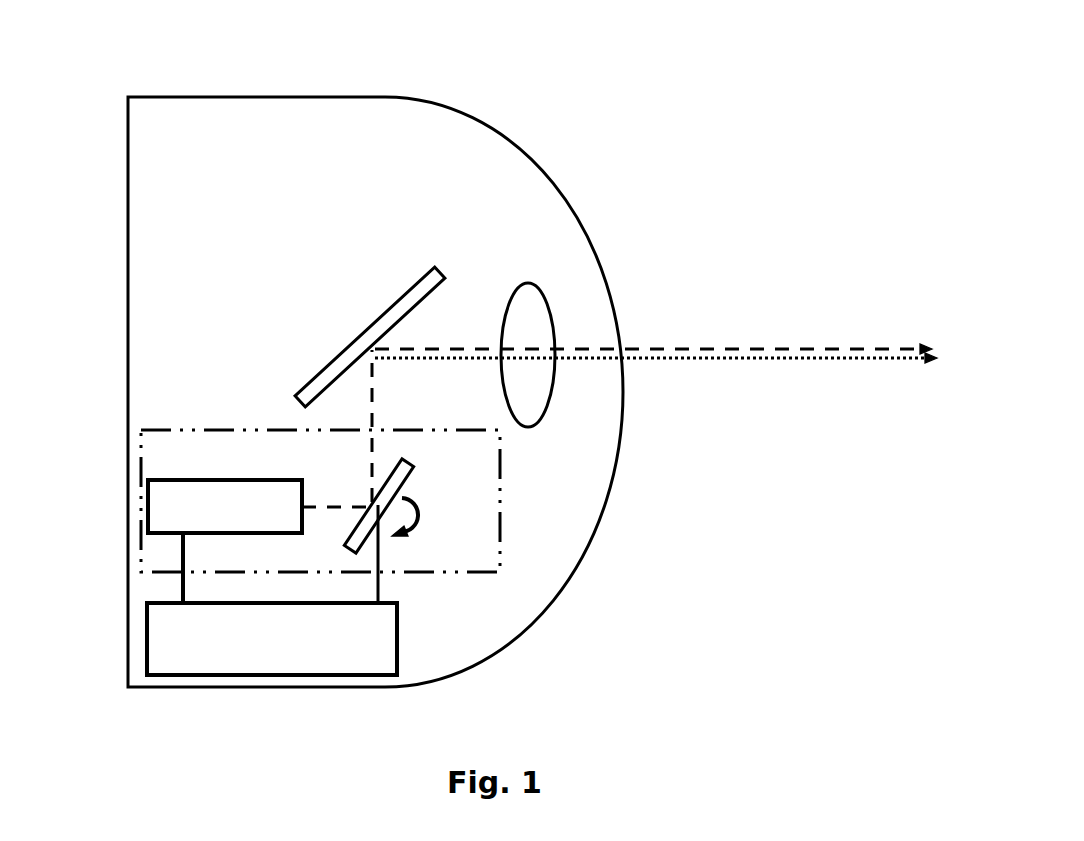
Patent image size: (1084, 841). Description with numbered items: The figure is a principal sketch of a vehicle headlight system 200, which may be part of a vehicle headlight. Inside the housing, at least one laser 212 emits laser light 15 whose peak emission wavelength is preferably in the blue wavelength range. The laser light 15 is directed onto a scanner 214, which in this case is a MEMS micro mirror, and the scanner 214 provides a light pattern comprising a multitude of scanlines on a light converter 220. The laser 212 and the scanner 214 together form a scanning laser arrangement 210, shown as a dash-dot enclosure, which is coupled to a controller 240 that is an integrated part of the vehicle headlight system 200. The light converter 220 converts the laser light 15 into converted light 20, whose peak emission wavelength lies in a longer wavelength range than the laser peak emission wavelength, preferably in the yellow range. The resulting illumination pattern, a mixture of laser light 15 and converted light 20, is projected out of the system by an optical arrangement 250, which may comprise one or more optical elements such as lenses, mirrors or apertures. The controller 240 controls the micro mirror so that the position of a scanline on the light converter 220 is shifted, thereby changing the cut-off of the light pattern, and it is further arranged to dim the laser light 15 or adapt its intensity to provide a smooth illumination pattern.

The vehicle headlight system 200 is at (138, 70).
The scanning laser arrangement 210 is at (165, 428).
The laser 212 is at (210, 498).
The scanner 214 is at (406, 476).
The light converter 220 is at (380, 312).
The controller 240 is at (398, 622).
The optical arrangement 250 is at (528, 285).
The laser light 15 is at (312, 506).
The converted light 20 is at (725, 362).